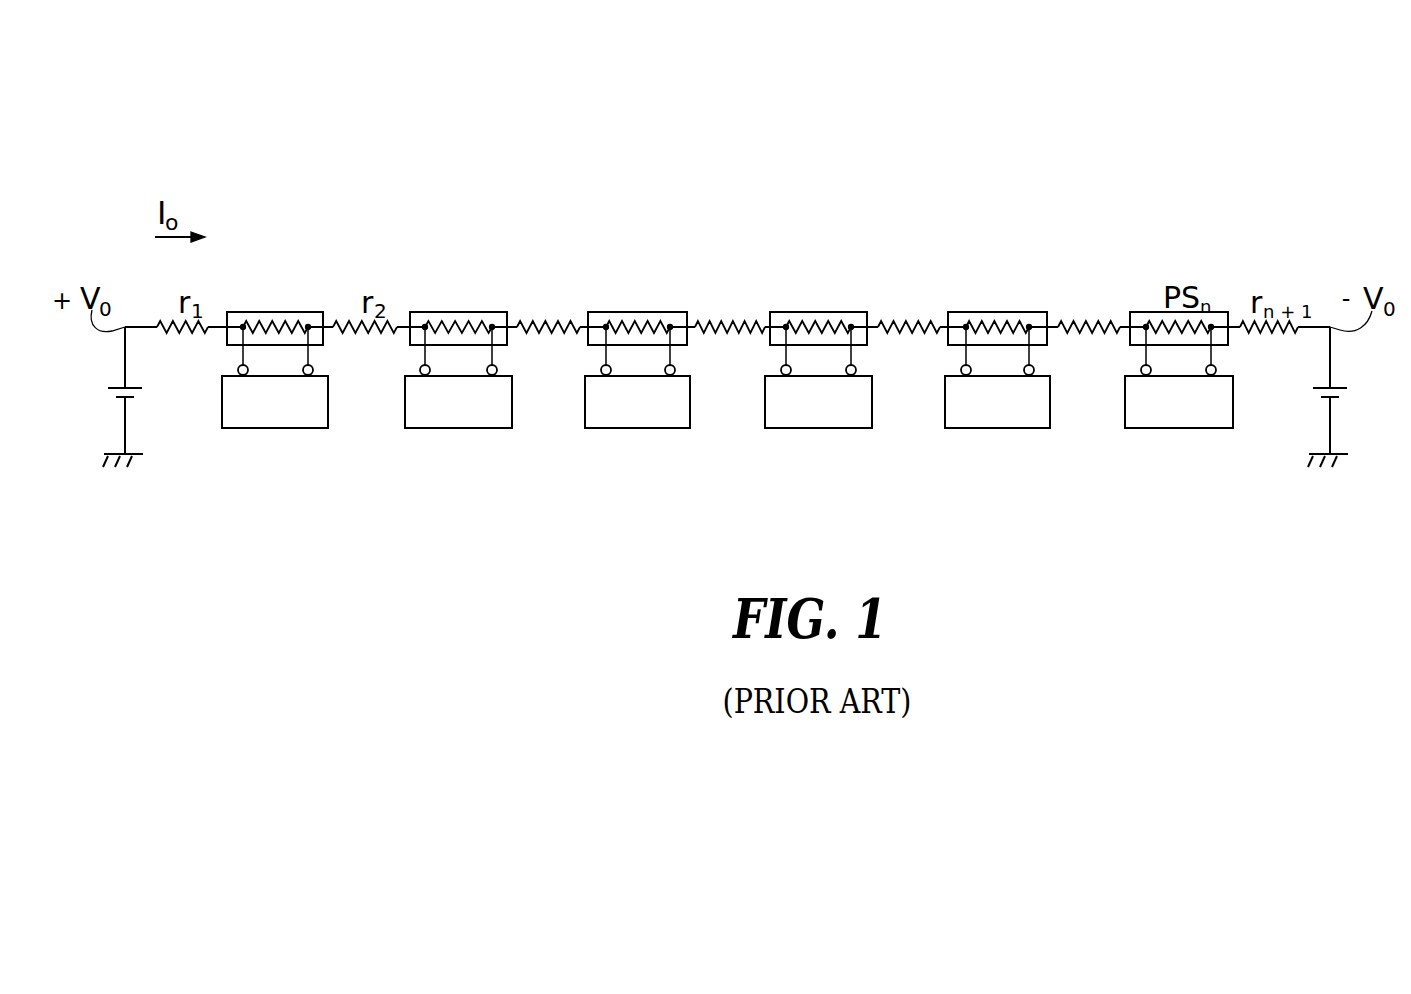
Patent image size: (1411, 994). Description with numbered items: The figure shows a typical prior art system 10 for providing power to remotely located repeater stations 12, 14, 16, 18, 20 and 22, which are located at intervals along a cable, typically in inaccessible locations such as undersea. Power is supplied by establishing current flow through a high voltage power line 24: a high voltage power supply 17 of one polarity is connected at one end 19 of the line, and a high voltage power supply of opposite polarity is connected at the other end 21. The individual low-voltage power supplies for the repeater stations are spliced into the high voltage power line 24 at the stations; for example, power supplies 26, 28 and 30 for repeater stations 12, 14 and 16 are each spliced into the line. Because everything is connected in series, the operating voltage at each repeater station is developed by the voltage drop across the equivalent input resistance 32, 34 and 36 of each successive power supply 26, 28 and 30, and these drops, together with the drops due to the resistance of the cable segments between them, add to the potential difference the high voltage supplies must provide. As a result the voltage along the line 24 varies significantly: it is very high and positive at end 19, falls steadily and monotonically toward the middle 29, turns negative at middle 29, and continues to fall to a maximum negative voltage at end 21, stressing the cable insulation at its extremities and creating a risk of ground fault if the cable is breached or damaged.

The prior art system 10 is at (703, 90).
The repeater station 12 is at (275, 428).
The repeater station 14 is at (457, 428).
The repeater station 16 is at (637, 428).
The high voltage power supply 17 is at (137, 397).
The repeater station 18 is at (818, 428).
The end of high voltage power line 19 is at (125, 327).
The repeater station 20 is at (997, 428).
The end of high voltage power line 21 is at (1330, 327).
The repeater station 22 is at (1180, 428).
The high voltage power line 24 is at (760, 283).
The power supply 26 is at (306, 312).
The power supply 28 is at (489, 312).
The middle of high voltage power line 29 is at (733, 334).
The power supply 30 is at (669, 312).
The equivalent input resistance 32 is at (253, 322).
The equivalent input resistance 34 is at (435, 322).
The equivalent input resistance 36 is at (615, 322).